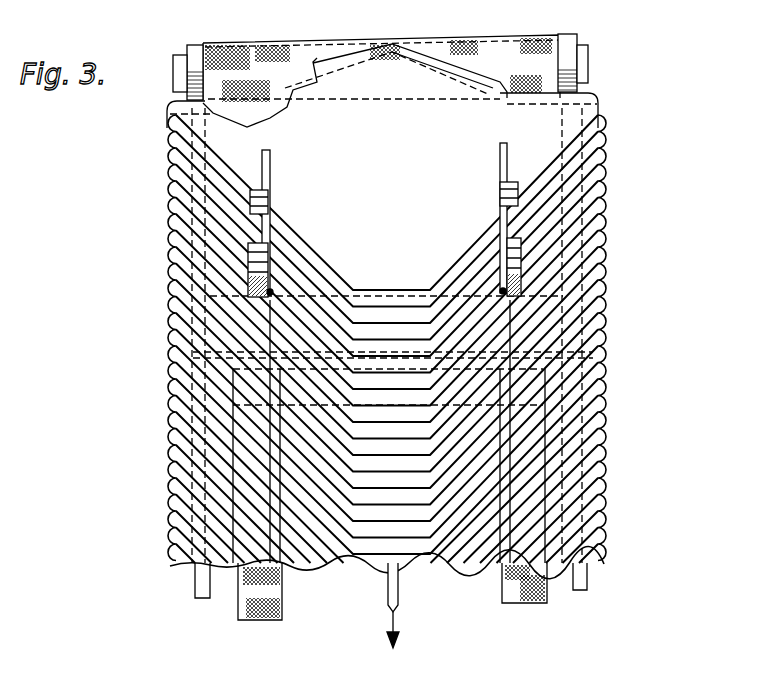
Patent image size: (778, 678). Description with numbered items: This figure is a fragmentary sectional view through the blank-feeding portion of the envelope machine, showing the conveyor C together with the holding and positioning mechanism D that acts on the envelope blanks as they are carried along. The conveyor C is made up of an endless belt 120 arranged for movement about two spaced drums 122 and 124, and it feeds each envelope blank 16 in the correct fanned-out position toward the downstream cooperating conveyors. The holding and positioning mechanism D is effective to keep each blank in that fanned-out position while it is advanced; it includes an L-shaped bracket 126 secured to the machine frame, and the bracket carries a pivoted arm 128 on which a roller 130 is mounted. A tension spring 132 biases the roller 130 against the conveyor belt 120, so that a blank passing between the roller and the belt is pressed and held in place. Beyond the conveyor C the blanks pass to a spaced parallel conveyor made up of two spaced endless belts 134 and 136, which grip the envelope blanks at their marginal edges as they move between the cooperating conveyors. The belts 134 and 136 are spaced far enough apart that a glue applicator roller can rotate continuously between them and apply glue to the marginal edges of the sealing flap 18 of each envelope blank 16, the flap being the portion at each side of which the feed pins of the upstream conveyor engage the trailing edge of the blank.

The envelope blank 16 is at (548, 128).
The sealing flap 18 is at (332, 62).
The endless belt 120 is at (520, 70).
The drum 122 is at (566, 42).
The drum 124 is at (540, 313).
The L-shaped bracket 126 is at (262, 265).
The pivoted arm 128 is at (270, 162).
The roller 130 is at (257, 190).
The tension spring 132 is at (272, 290).
The endless belt 134 is at (260, 617).
The endless belt 136 is at (515, 604).
The conveyor C is at (170, 209).
The holding and positioning mechanism D is at (274, 179).